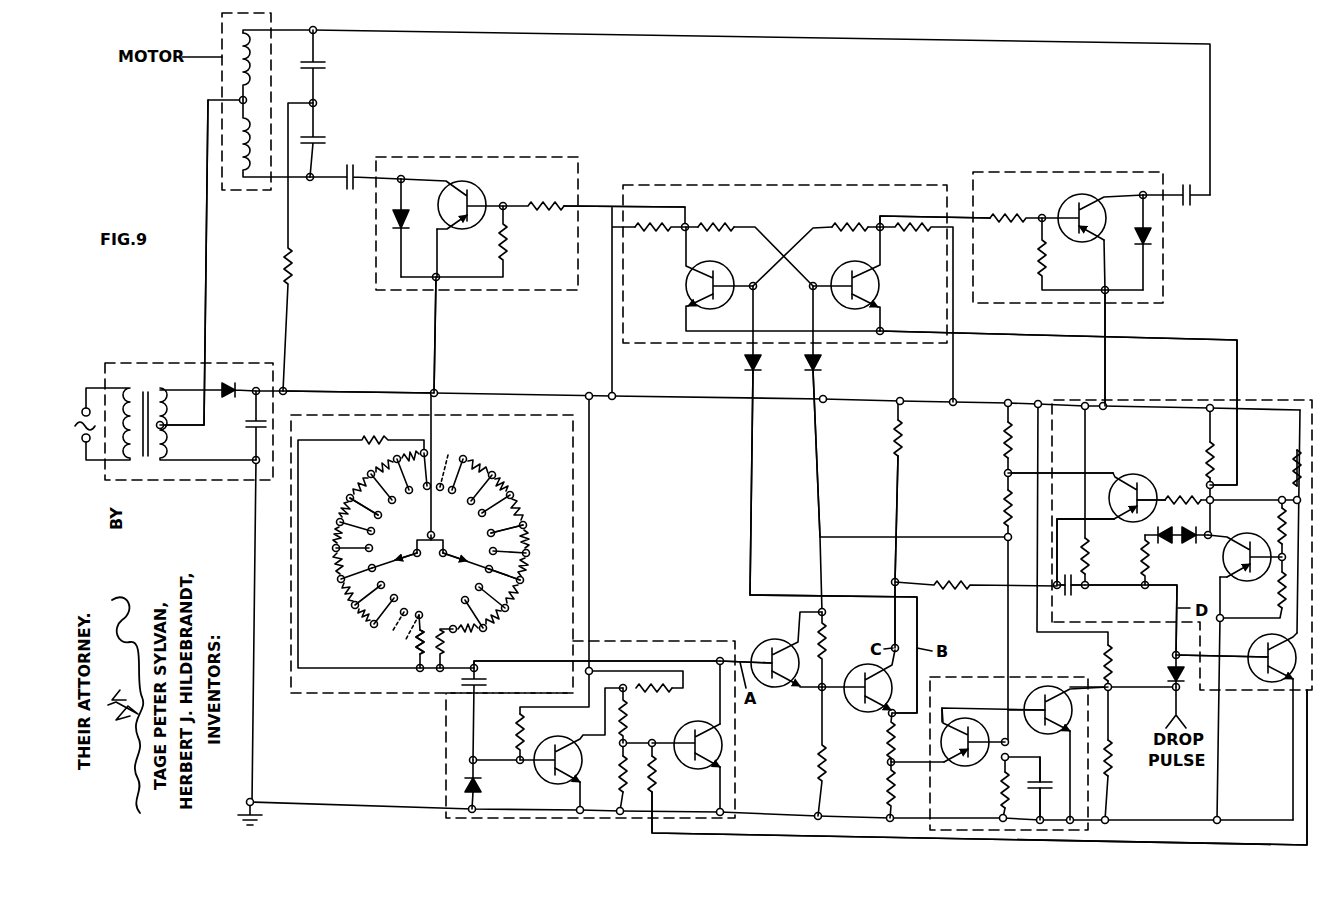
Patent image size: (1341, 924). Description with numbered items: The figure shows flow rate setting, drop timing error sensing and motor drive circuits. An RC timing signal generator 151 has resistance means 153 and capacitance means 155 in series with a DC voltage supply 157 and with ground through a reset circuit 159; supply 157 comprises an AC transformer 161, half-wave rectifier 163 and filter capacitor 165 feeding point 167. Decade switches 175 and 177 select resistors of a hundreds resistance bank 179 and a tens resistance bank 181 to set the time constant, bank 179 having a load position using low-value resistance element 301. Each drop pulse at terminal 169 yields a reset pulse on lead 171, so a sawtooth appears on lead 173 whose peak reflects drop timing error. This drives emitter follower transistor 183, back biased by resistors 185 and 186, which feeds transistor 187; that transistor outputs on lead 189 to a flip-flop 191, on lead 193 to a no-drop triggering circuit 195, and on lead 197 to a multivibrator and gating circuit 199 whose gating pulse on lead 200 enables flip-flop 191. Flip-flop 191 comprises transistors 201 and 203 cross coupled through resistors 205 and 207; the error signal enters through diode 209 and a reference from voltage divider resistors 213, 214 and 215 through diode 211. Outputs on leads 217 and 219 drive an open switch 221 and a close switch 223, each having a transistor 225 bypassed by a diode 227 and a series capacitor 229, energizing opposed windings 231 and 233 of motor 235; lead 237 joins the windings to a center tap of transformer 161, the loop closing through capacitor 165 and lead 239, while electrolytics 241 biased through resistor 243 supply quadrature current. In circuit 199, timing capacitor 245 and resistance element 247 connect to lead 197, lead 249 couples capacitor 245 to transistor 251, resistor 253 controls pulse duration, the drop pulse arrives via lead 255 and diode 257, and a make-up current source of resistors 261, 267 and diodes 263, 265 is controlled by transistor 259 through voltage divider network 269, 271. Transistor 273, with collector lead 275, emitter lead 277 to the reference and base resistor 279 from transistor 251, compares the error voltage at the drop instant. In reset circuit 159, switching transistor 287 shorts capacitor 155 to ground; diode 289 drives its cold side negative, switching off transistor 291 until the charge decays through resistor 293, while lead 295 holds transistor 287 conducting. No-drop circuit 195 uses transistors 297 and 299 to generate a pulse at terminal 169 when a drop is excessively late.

The RC timing signal generator circuit 151 is at (313, 694).
The resistance means 153 is at (514, 470).
The capacitance means 155 is at (487, 684).
The DC voltage supply 157 is at (165, 363).
The reset circuit 159 is at (700, 641).
The AC transformer 161 is at (147, 393).
The half-wave rectifier 163 is at (225, 398).
The filter capacitor 165 is at (243, 428).
The point 167 is at (432, 392).
The terminal 169 is at (1170, 693).
The lead 171 is at (1178, 845).
The lead 173 is at (537, 661).
The decade switch 175 is at (393, 566).
The decade switch 177 is at (465, 566).
The hundreds resistance bank 179 is at (340, 494).
The tens resistance bank 181 is at (520, 503).
The transistor 183 is at (748, 648).
The resistor 185 is at (830, 647).
The resistor 186 is at (812, 757).
The transistor 187 is at (846, 704).
The lead 189 is at (920, 618).
The flip-flop 191 is at (767, 185).
The lead 193 is at (928, 770).
The no-drop triggering circuit 195 is at (878, 772).
The lead 197 is at (907, 580).
The variable one-shot multivibrator and gating circuit 199 is at (1286, 400).
The lead 200 is at (1200, 341).
The transistor 201 is at (686, 283).
The transistor 203 is at (880, 284).
The resistor 205 is at (722, 236).
The resistor 207 is at (842, 236).
The diode 209 is at (745, 368).
The diode 211 is at (822, 369).
The resistor 213 is at (1002, 440).
The resistor 214 is at (1002, 507).
The resistor 215 is at (1024, 779).
The lead 217 is at (598, 200).
The lead 219 is at (960, 212).
The open switch 221 is at (430, 157).
The close switch 223 is at (1086, 172).
The transistor 225 is at (478, 189).
The diode 227 is at (393, 222).
The capacitor 229 is at (351, 190).
The motor winding 231 is at (240, 70).
The motor winding 233 is at (238, 150).
The motor 235 is at (252, 192).
The lead 237 is at (206, 312).
The lead 239 is at (437, 334).
The electrolytic capacitors 241 is at (326, 66).
The biasing resistor 243 is at (290, 270).
The timing capacitor 245 is at (1068, 597).
The resistance element 247 is at (956, 578).
The lead 249 is at (1126, 590).
The transistor 251 is at (1258, 684).
The resistor 253 is at (1090, 557).
The lead 255 is at (1172, 661).
The diode 257 is at (1166, 675).
The transistor 259 is at (1245, 569).
The resistor 261 is at (1127, 559).
The diode 263 is at (1162, 546).
The Zener diode 265 is at (1196, 546).
The resistor 267 is at (1203, 453).
The voltage divider resistor 269 is at (1276, 527).
The voltage divider resistor 271 is at (1273, 607).
The transistor 273 is at (1133, 474).
The lead 275 is at (1083, 539).
The lead 277 is at (1068, 472).
The resistor 279 is at (1176, 494).
The switching transistor 287 is at (687, 736).
The diode 289 is at (482, 786).
The transistor 291 is at (571, 736).
The resistor 293 is at (514, 732).
The lead 295 is at (628, 735).
The transistor 297 is at (941, 741).
The transistor 299 is at (1058, 753).
The resistance element 301 is at (418, 660).